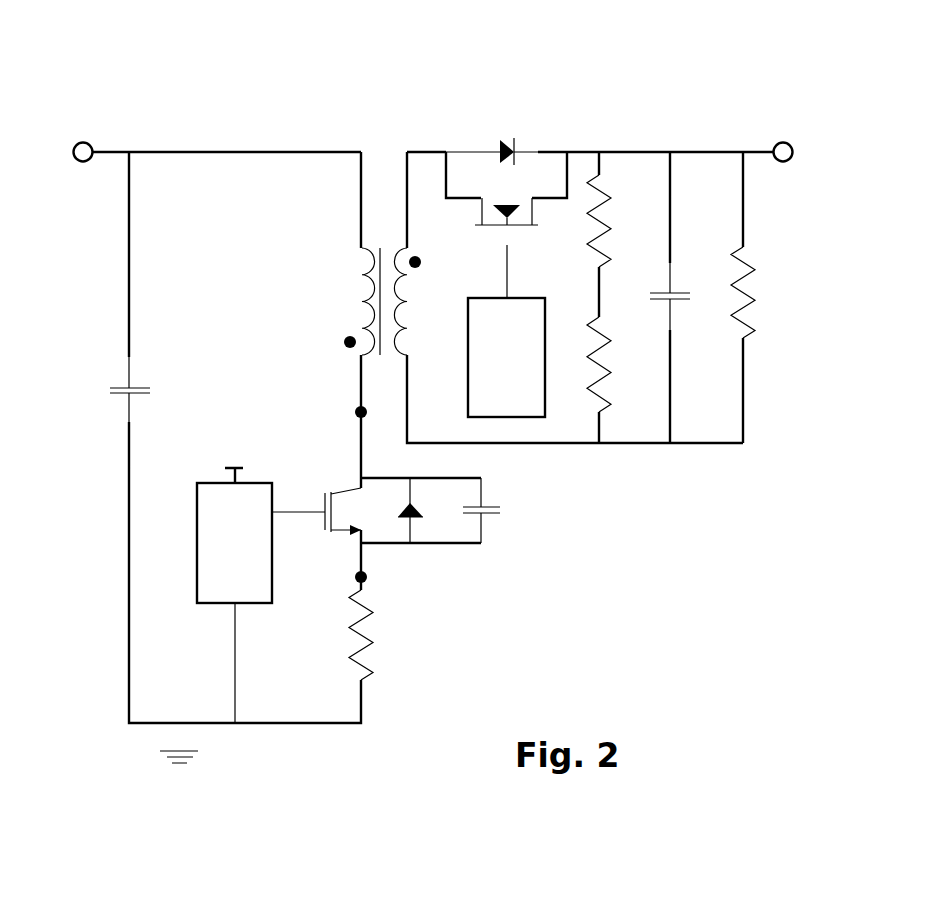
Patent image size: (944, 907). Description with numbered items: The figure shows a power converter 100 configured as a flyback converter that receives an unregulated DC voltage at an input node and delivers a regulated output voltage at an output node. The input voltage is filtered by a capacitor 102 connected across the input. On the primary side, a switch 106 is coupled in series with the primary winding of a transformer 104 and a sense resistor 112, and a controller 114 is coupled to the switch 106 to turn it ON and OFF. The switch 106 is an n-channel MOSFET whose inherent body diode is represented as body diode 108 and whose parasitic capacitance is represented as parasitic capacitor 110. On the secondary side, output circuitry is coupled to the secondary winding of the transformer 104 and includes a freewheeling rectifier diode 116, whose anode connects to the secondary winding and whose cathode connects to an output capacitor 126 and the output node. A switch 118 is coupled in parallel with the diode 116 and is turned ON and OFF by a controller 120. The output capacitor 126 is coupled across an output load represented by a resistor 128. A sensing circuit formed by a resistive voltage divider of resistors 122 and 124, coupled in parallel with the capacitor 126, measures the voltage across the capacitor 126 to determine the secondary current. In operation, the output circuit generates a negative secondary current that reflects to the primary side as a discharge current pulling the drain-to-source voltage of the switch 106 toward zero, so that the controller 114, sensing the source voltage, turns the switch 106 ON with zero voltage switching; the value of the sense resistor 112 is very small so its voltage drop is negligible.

The power converter 100 is at (440, 398).
The capacitor 102 is at (118, 386).
The transformer 104 is at (380, 242).
The switch 106 is at (322, 497).
The body diode 108 is at (420, 522).
The parasitic capacitor 110 is at (470, 520).
The sense resistor 112 is at (378, 632).
The controller 114 is at (257, 605).
The freewheeling rectifier diode 116 is at (505, 133).
The switch 118 is at (540, 222).
The controller 120 is at (524, 418).
The resistor 122 is at (615, 243).
The resistor 124 is at (614, 367).
The output capacitor 126 is at (680, 292).
The resistor 128 is at (755, 302).